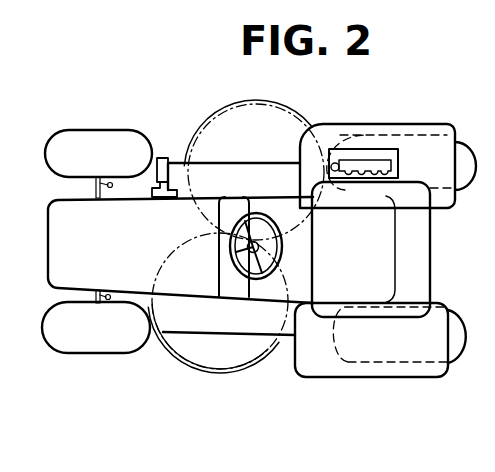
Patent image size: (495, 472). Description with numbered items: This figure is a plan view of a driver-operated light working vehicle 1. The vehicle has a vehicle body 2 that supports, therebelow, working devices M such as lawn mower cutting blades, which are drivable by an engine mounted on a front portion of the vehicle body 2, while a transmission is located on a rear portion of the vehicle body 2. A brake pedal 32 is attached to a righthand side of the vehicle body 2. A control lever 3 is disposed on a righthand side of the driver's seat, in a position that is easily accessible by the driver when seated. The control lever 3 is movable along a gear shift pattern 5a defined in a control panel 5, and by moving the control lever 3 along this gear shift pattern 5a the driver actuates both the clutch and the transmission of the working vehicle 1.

The working vehicle 1 is at (183, 141).
The vehicle body 2 is at (261, 296).
The control lever 3 is at (314, 212).
The control panel 5 is at (388, 153).
The gear shift pattern 5a is at (373, 158).
The brake pedal 32 is at (162, 157).
The working devices M is at (256, 100).